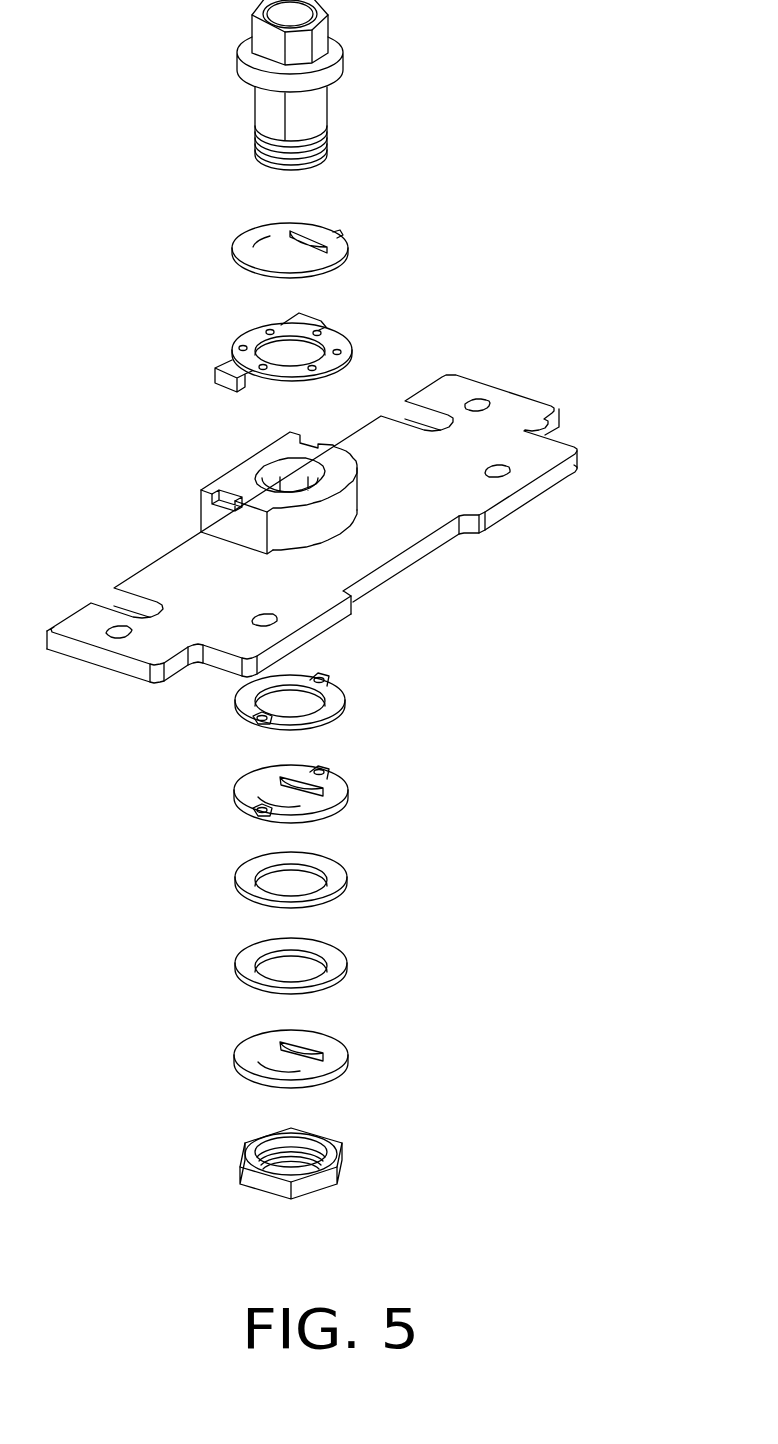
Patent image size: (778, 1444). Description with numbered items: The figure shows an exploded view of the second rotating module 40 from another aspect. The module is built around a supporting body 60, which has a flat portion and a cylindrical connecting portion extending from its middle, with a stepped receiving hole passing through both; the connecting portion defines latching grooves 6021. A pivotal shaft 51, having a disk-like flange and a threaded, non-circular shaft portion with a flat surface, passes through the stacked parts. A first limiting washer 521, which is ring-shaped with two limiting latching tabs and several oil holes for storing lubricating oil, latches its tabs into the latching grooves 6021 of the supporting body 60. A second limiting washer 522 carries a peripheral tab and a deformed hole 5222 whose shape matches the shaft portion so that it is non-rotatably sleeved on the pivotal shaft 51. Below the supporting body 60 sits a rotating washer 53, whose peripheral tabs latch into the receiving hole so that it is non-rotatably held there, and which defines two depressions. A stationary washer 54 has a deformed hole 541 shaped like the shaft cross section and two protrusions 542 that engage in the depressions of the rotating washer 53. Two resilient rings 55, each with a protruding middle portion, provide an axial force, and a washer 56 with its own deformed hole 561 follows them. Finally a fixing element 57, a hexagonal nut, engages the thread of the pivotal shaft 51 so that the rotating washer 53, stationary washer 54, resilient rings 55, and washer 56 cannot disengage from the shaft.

The second rotating module 40 is at (497, 143).
The pivotal shaft 51 is at (338, 70).
The second limiting washer 522 is at (243, 248).
The deformed hole 5222 is at (305, 252).
The first limiting washer 521 is at (248, 338).
The supporting body 60 is at (535, 390).
The latching grooves 6021 is at (217, 497).
The rotating washer 53 is at (345, 693).
The stationary washer 54 is at (335, 792).
The deformed hole 541 is at (277, 793).
The protrusions 542 is at (267, 810).
The resilient rings 55 is at (227, 875).
The washer 56 is at (337, 1052).
The deformed hole 561 is at (277, 1057).
The fixing element 57 is at (335, 1142).